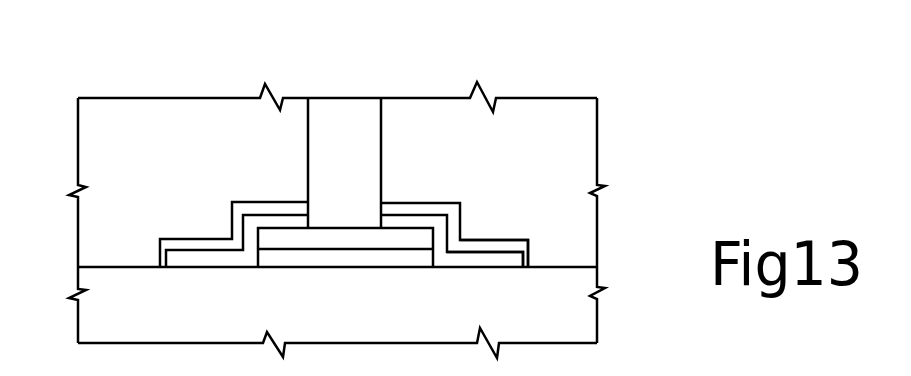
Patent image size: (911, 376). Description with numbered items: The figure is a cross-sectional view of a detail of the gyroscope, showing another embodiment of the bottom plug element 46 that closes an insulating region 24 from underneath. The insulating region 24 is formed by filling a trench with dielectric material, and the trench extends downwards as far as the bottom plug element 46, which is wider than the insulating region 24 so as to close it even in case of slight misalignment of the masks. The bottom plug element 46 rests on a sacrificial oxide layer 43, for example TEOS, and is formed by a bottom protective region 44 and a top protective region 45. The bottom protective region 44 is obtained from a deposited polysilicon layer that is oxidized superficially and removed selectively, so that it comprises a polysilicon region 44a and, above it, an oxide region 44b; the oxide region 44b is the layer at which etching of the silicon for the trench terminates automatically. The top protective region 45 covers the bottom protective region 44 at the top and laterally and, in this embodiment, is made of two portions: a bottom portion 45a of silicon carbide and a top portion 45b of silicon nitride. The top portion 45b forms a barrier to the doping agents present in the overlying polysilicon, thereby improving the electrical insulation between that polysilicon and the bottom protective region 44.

The insulating region 24 is at (333, 120).
The sacrificial oxide layer 43 is at (103, 312).
The bottom protective region 44 is at (394, 218).
The polysilicon region 44a is at (379, 256).
The oxide region 44b is at (298, 237).
The top protective region 45 is at (344, 157).
The bottom portion 45a is at (252, 225).
The top portion 45b is at (265, 210).
The bottom plug element 46 is at (478, 217).